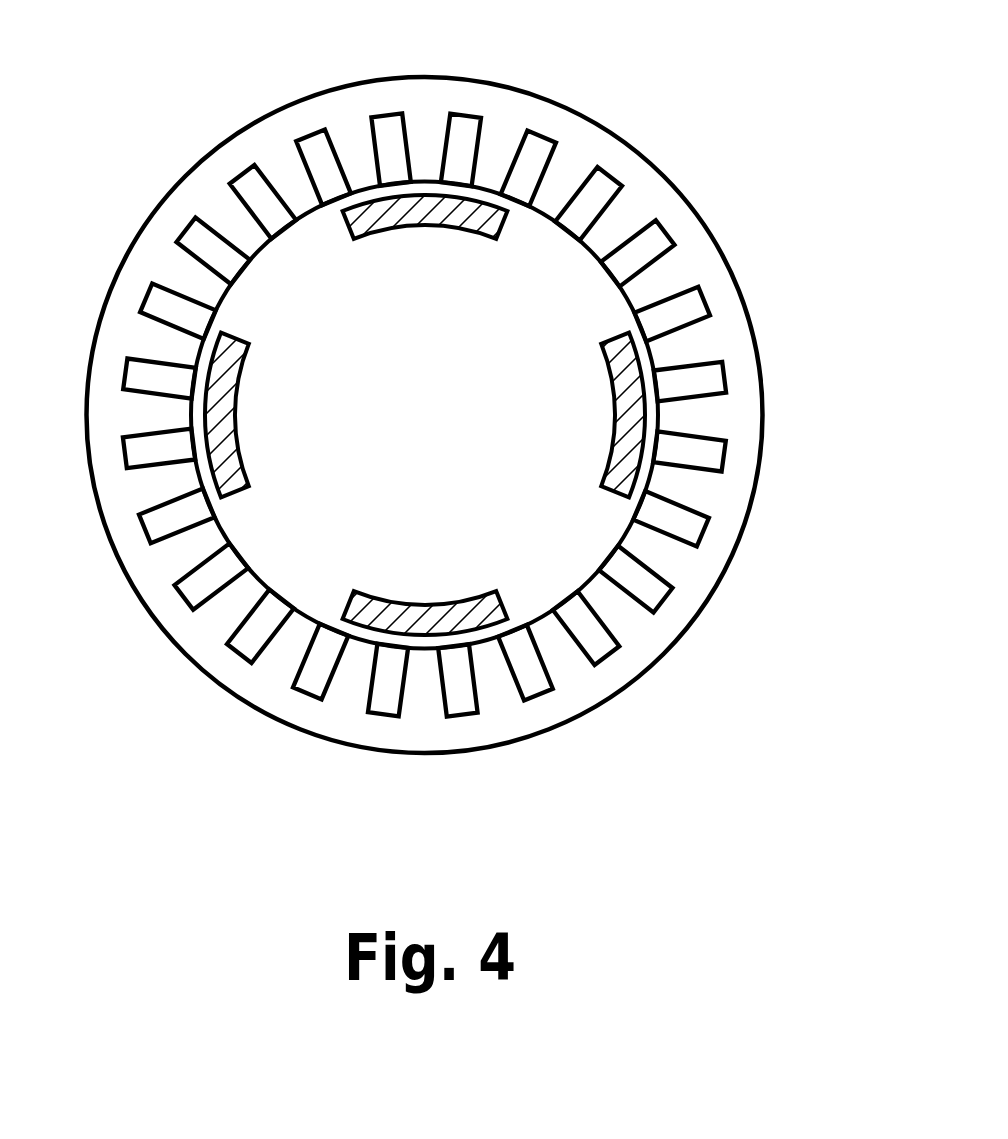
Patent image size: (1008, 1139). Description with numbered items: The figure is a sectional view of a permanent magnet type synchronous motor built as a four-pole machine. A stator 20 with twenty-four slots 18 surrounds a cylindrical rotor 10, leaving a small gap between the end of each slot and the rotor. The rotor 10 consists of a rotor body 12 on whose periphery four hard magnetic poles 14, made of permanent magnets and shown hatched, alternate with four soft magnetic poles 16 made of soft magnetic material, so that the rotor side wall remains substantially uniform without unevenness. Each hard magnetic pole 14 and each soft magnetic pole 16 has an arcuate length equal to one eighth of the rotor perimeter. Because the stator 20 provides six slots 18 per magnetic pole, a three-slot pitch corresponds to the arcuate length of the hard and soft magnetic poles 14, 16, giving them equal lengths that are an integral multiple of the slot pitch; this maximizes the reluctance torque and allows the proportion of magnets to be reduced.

The rotor 10 is at (403, 381).
The rotor body 12 is at (535, 365).
The hard magnetic poles 14 is at (400, 222).
The soft magnetic poles 16 is at (280, 275).
The slots 18 is at (395, 123).
The stator 20 is at (462, 381).